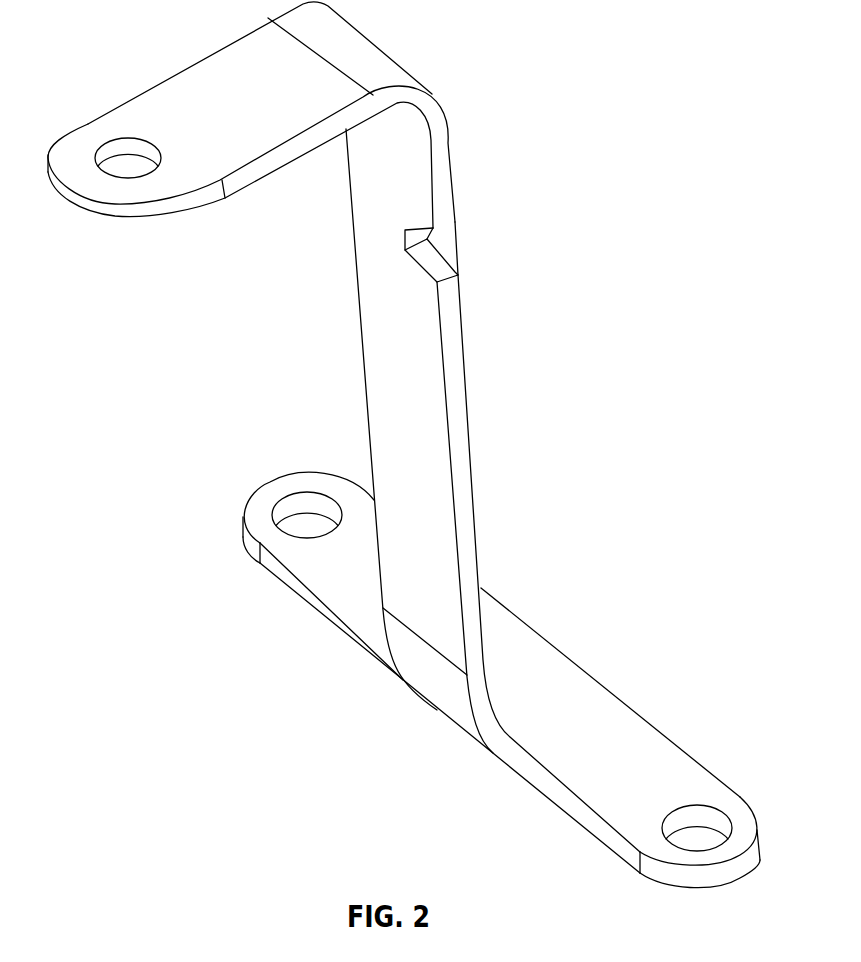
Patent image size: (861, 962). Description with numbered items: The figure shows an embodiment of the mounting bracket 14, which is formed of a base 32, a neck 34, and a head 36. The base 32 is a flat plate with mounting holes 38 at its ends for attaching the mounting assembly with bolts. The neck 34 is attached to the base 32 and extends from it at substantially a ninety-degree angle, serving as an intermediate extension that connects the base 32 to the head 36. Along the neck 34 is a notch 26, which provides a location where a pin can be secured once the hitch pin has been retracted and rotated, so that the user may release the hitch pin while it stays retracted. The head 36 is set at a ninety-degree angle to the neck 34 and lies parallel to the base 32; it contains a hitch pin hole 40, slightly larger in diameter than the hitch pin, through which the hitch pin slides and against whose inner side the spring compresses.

The mounting bracket 14 is at (522, 70).
The notch 26 is at (456, 249).
The base 32 is at (600, 686).
The neck 34 is at (467, 420).
The head 36 is at (205, 58).
The mounting holes 38 is at (257, 502).
The hitch pin hole 40 is at (95, 131).